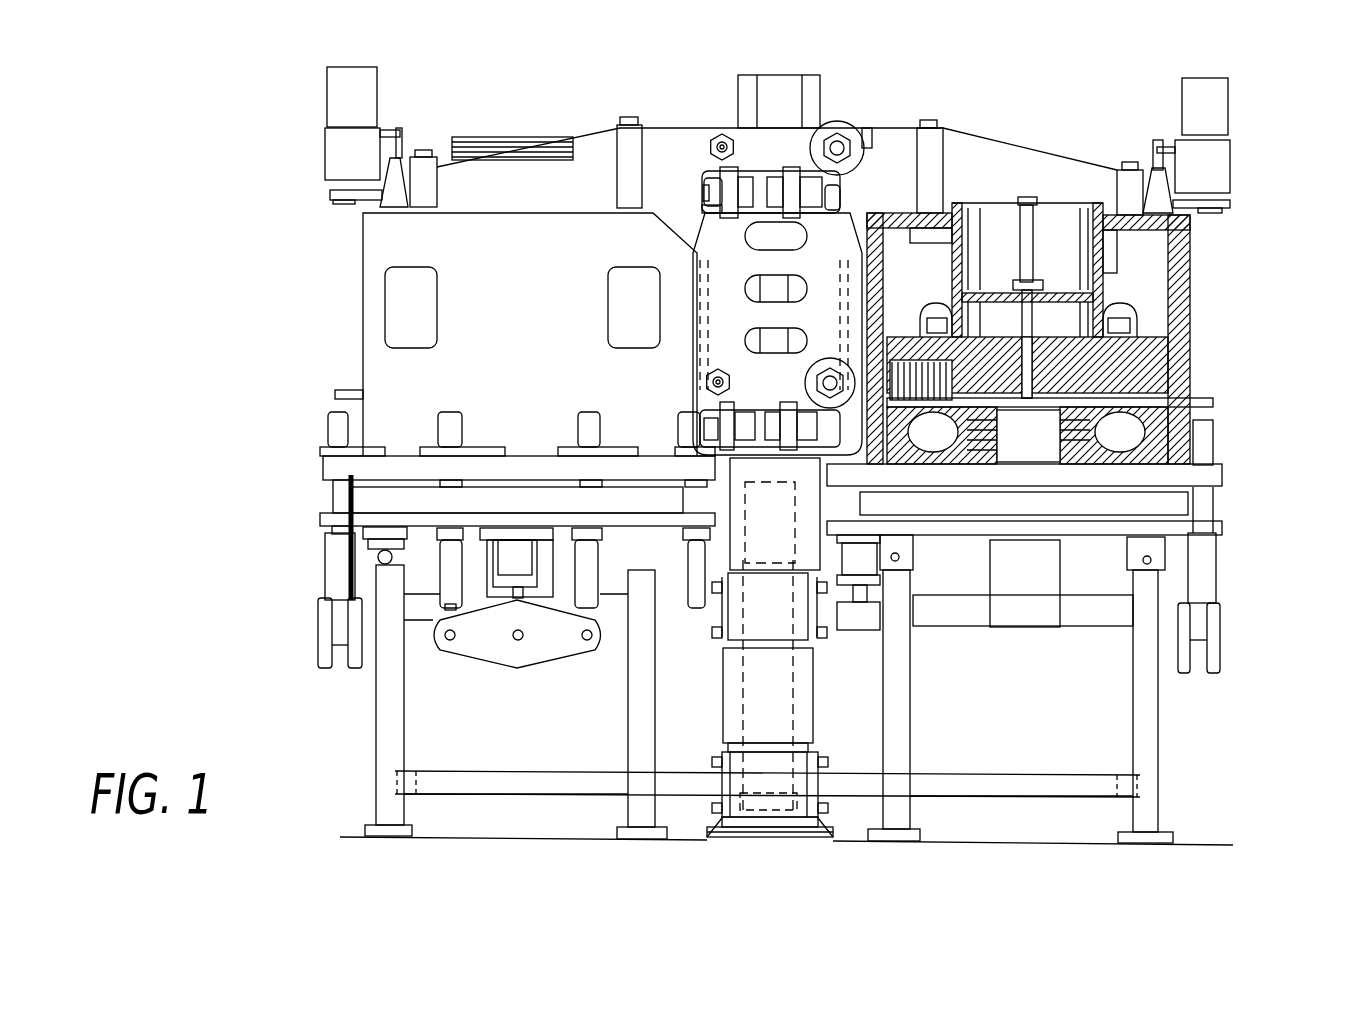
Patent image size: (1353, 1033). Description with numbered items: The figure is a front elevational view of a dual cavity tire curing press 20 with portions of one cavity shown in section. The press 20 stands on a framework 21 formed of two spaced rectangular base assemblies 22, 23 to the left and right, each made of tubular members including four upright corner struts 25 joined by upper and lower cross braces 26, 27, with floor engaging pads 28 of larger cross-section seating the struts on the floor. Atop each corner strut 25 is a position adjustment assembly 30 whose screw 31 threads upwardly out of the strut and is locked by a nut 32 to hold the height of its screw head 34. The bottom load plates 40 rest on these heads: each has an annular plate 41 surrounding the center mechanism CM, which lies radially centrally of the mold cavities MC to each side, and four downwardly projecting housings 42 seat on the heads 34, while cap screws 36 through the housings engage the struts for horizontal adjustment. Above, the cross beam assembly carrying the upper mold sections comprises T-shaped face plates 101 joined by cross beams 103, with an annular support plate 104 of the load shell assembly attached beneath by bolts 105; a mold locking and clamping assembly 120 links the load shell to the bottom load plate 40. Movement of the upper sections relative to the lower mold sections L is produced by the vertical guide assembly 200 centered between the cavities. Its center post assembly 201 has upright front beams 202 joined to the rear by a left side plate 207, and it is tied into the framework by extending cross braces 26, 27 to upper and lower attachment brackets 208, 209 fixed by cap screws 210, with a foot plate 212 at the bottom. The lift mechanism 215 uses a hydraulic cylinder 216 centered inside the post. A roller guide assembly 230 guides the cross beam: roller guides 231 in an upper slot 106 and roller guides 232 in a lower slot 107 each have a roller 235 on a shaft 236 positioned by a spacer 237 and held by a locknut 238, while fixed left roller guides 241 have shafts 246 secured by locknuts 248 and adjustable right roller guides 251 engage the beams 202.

The dual cavity tire curing press 20 is at (288, 252).
The framework 21 is at (355, 780).
The base assembly 22 is at (462, 798).
The base assembly 23 is at (1085, 805).
The corner struts 25 is at (378, 808).
The upper cross braces 26 is at (420, 627).
The lower cross braces 27 is at (395, 778).
The floor engaging pads 28 is at (400, 836).
The position adjustment assemblies 30 is at (367, 567).
The screw 31 is at (377, 557).
The nut 32 is at (340, 530).
The screw head 34 is at (352, 530).
The cap screws 36 is at (425, 565).
The bottom load plates 40 is at (312, 518).
The annular plate 41 is at (337, 512).
The housings 42 is at (430, 557).
The T-shaped face plates 101 is at (888, 137).
The cross beams 103 is at (845, 335).
The annular support plate 104 is at (940, 128).
The bolts 105 is at (1127, 163).
The elongate slot 106 is at (832, 190).
The elongate slot 107 is at (717, 426).
The mold locking and clamping assembly 120 is at (1213, 503).
The vertical guide assembly 200 is at (722, 700).
The center post assembly 201 is at (720, 728).
The front beams 202 is at (748, 95).
The left side plate 207 is at (820, 825).
The upper attachment brackets 208 is at (718, 640).
The lower attachment brackets 209 is at (724, 822).
The cap screws 210 is at (822, 762).
The foot plate 212 is at (815, 834).
The lift mechanism 215 is at (802, 692).
The hydraulic cylinder 216 is at (757, 807).
The roller guide assembly 230 is at (850, 112).
The roller guides 231 is at (792, 172).
The roller guides 232 is at (720, 405).
The roller 235 is at (748, 185).
The shaft 236 is at (713, 192).
The spacer 237 is at (710, 165).
The locknut 238 is at (720, 207).
The roller guides 241 is at (720, 150).
The shaft 246 is at (715, 135).
The locknut 248 is at (688, 135).
The roller guides 251 is at (870, 117).
The mold cavities MC is at (1190, 383).
The lower mold sections L is at (1163, 445).
The center mechanism CM is at (1010, 605).